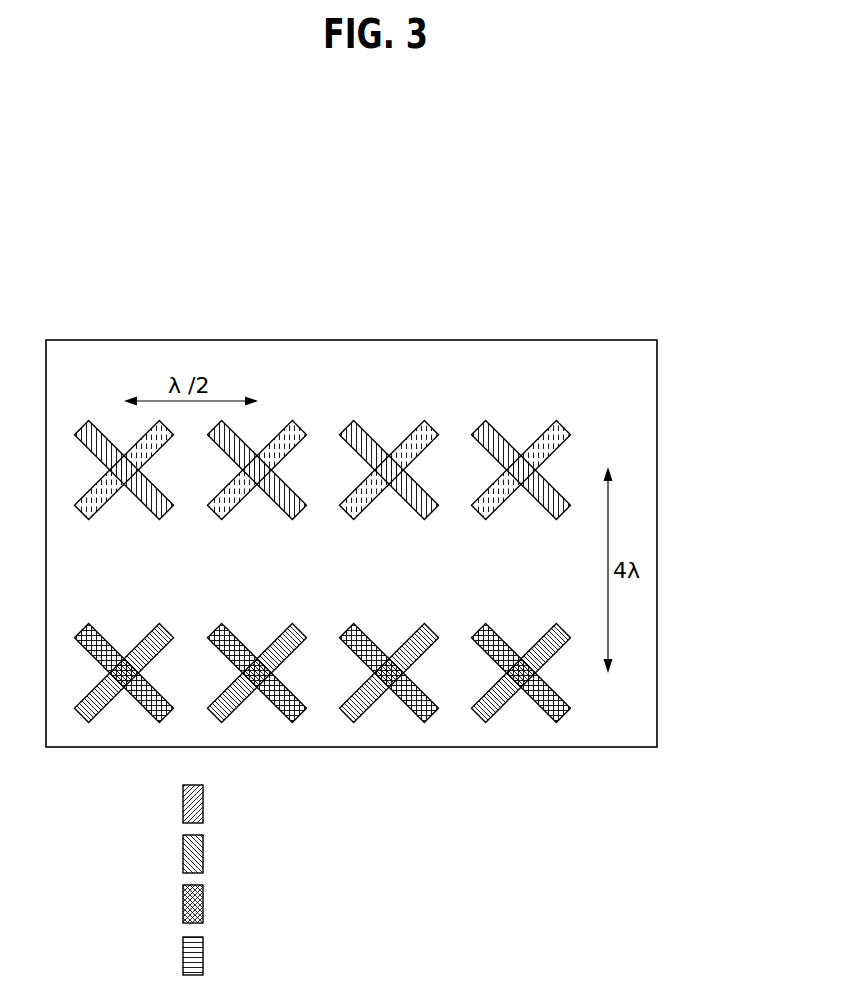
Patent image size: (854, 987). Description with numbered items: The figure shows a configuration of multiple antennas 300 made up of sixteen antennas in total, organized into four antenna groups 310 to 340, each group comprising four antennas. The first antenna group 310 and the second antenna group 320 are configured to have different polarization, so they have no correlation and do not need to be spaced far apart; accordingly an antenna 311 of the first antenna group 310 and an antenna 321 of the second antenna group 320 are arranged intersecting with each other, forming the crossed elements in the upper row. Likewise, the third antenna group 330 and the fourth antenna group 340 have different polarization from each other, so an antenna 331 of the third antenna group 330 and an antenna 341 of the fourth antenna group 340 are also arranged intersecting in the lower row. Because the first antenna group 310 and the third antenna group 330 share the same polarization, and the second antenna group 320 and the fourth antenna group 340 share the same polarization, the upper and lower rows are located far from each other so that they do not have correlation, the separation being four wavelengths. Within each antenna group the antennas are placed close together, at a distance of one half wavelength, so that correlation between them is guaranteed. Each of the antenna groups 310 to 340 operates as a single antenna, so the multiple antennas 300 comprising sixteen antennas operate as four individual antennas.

The multiple antennas 300 is at (657, 385).
The antenna of the first antenna group 311 is at (348, 420).
The antenna of the second antenna group 321 is at (420, 420).
The antenna of the third antenna group 331 is at (348, 623).
The antenna of the fourth antenna group 341 is at (420, 623).
The first antenna group 310 is at (456, 804).
The second antenna group 320 is at (456, 854).
The third antenna group 330 is at (456, 906).
The fourth antenna group 340 is at (456, 956).